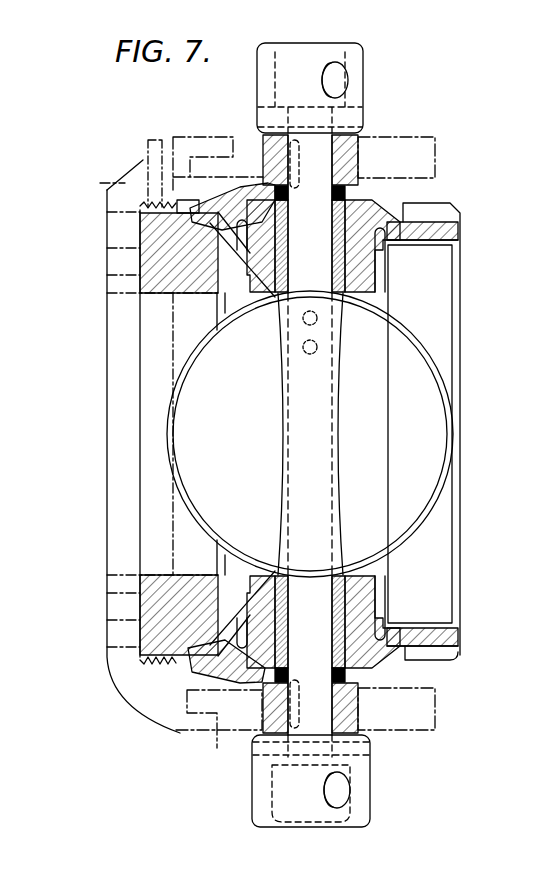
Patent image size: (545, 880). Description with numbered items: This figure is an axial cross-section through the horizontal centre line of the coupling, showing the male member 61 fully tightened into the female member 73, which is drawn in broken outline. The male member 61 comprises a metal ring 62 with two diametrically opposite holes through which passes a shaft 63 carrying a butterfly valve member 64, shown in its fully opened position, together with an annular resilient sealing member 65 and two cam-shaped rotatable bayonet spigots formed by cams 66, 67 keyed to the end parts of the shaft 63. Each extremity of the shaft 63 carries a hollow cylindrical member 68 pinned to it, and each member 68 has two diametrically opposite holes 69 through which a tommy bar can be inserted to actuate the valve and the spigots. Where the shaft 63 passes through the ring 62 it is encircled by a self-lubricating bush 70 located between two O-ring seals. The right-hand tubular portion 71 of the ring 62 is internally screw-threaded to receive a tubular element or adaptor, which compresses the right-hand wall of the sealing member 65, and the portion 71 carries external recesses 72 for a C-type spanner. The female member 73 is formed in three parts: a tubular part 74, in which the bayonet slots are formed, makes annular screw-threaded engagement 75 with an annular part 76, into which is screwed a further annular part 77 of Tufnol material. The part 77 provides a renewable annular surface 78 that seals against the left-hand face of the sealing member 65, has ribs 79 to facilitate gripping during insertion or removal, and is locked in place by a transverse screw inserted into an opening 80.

The male member 61 is at (403, 210).
The metal ring 62 is at (367, 207).
The shaft 63 is at (320, 585).
The butterfly valve member 64 is at (430, 448).
The annular resilient sealing member 65 is at (370, 293).
The cam 66 is at (343, 162).
The cam 67 is at (342, 712).
The hollow cylindrical member 68 is at (358, 90).
The holes 69 is at (350, 82).
The self-lubricating bush 70 is at (383, 260).
The right-hand tubular portion 71 is at (443, 230).
The recesses 72 is at (452, 657).
The female member 73 is at (138, 677).
The tubular part 74 is at (433, 150).
The annular screw-threaded engagement 75 is at (207, 155).
The annular part 76 is at (120, 181).
The further annular part 77 is at (160, 645).
The annular surface 78 is at (230, 273).
The ribs 79 is at (140, 222).
The opening 80 is at (157, 160).